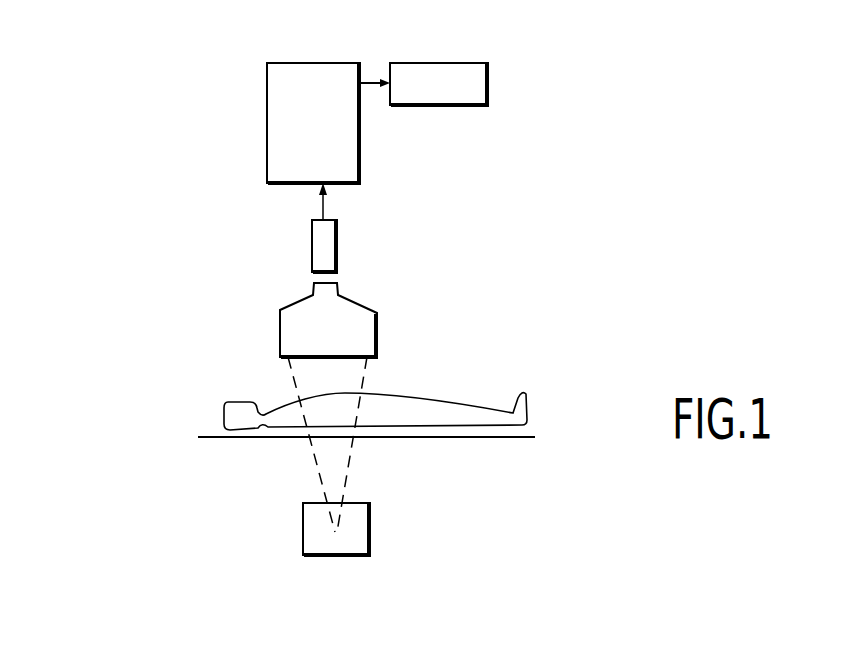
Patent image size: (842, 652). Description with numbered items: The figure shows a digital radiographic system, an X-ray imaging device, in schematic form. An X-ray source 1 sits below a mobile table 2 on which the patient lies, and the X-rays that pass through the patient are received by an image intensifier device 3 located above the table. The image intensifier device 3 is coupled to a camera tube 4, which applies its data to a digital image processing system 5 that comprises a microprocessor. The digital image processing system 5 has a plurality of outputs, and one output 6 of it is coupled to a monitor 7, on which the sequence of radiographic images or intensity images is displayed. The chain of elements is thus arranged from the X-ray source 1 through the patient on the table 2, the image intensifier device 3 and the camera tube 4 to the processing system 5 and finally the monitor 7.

The X-ray source 1 is at (303, 530).
The mobile table 2 is at (243, 447).
The image intensifier device 3 is at (273, 304).
The camera tube 4 is at (303, 240).
The digital image processing system 5 is at (283, 116).
The output 6 is at (373, 60).
The monitor 7 is at (503, 88).